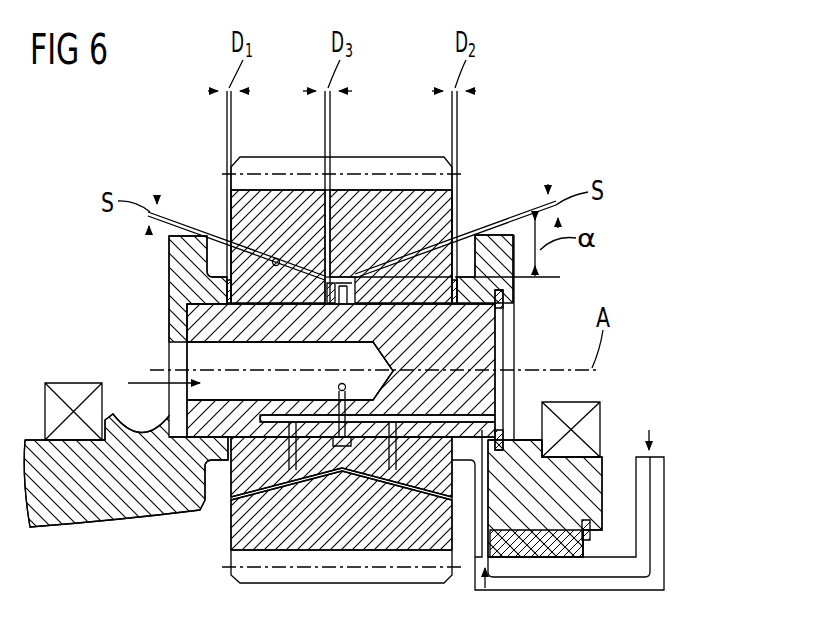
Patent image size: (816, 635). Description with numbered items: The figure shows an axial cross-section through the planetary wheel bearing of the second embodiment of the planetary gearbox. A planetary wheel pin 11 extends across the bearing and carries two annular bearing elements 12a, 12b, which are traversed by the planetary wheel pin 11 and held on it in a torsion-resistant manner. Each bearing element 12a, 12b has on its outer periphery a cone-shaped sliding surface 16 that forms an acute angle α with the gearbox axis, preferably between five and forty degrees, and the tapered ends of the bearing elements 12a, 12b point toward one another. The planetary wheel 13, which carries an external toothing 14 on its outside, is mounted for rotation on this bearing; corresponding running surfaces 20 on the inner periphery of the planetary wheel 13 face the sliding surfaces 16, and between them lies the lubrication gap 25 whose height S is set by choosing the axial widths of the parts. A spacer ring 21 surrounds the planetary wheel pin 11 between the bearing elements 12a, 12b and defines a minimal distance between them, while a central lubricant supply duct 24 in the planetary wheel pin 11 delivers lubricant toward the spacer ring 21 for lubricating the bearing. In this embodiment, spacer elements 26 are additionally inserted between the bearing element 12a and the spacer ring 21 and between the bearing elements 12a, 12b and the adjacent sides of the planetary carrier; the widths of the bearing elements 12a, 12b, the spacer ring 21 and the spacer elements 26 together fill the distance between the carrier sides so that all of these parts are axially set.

The planetary wheel pin 11 is at (475, 353).
The bearing element 12a is at (236, 318).
The bearing element 12b is at (436, 326).
The planetary wheel 13 is at (422, 207).
The external toothing 14 is at (258, 167).
The sliding surface 16 is at (323, 245).
The running surface 20 is at (293, 256).
The spacer ring 21 is at (346, 264).
The central lubricant supply duct 24 is at (200, 357).
The lubrication gap 25 is at (388, 255).
The spacer element 26 is at (200, 292).